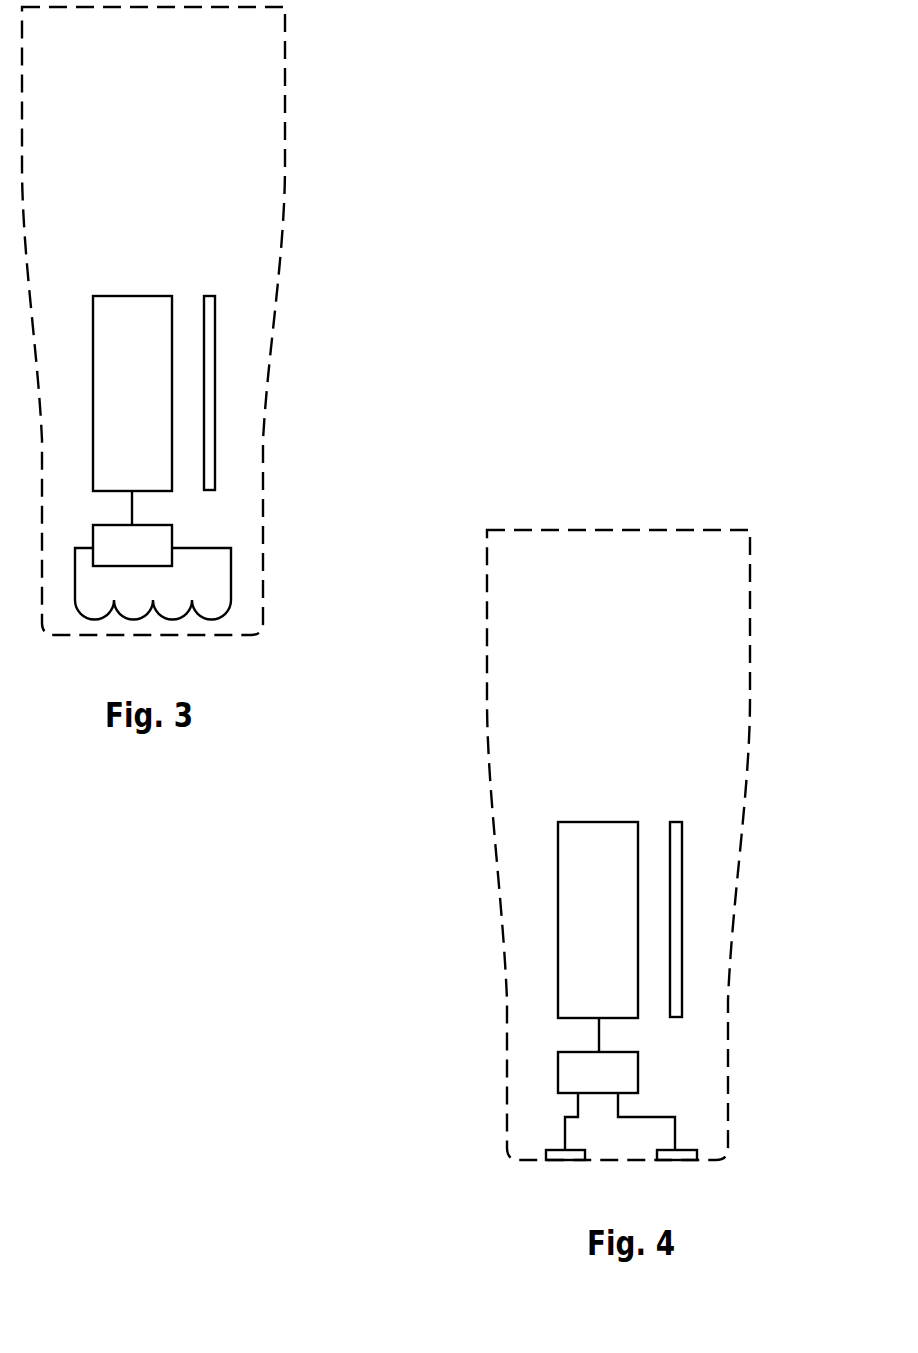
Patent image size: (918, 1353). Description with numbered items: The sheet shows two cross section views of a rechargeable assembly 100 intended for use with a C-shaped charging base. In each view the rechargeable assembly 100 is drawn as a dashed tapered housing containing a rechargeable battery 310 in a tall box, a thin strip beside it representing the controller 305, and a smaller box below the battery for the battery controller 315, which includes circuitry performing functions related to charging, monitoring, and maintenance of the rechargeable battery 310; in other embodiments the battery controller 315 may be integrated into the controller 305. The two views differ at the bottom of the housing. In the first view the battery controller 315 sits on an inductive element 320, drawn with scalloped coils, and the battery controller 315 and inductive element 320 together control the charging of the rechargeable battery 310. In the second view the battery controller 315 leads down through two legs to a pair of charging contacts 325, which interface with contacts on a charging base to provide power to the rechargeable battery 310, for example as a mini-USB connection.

In FIG. 3, the rechargeable assembly 100 is at (379, 92).
In FIG. 4, the rechargeable assembly 100 is at (342, 1086).
In FIG. 3, the controller 305 is at (218, 437).
In FIG. 4, the controller 305 is at (686, 965).
In FIG. 3, the rechargeable battery 310 is at (174, 297).
In FIG. 4, the rechargeable battery 310 is at (597, 894).
In FIG. 3, the battery controller 315 is at (175, 528).
In FIG. 4, the battery controller 315 is at (596, 1070).
In FIG. 3, the inductive element 320 is at (234, 601).
In FIG. 4, the charging contacts 325 is at (590, 1147).